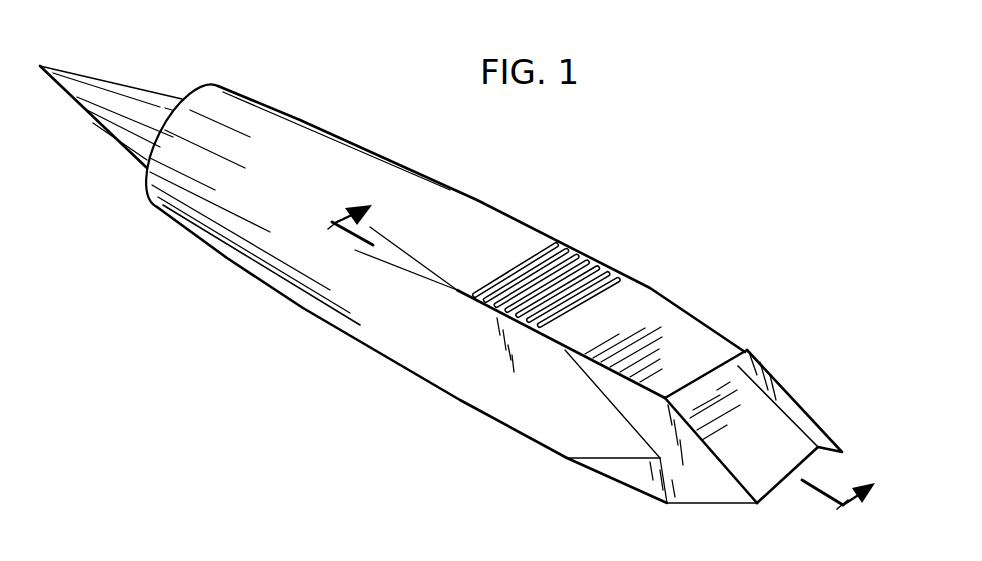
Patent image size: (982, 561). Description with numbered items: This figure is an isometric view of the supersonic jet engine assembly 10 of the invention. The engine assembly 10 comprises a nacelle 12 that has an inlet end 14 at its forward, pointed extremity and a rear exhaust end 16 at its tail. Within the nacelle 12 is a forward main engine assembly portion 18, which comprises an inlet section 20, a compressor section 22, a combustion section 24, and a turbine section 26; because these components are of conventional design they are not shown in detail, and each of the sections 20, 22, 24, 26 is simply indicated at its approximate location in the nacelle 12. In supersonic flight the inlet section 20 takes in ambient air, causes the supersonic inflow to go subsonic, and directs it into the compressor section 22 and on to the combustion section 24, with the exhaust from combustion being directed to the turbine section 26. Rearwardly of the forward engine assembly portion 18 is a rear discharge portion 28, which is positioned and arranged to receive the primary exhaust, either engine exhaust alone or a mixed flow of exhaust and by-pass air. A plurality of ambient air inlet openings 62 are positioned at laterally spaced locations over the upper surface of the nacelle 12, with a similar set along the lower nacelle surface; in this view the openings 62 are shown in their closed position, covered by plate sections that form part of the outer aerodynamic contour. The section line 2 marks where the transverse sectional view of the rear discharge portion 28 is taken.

The engine assembly 10 is at (560, 182).
The nacelle 12 is at (429, 177).
The inlet end 14 is at (192, 92).
The rear exhaust end 16 is at (792, 394).
The forward main engine assembly portion 18 is at (379, 154).
The inlet section 20 is at (177, 98).
The compressor section 22 is at (227, 257).
The combustion section 24 is at (260, 277).
The turbine section 26 is at (303, 307).
The rear discharge portion 28 is at (694, 315).
The ambient air inlet openings 62 is at (567, 263).
The section line 2- 2 is at (603, 346).